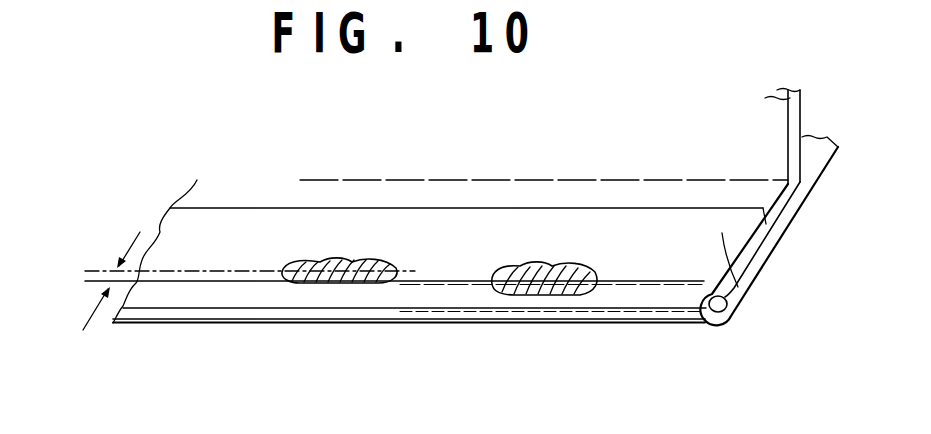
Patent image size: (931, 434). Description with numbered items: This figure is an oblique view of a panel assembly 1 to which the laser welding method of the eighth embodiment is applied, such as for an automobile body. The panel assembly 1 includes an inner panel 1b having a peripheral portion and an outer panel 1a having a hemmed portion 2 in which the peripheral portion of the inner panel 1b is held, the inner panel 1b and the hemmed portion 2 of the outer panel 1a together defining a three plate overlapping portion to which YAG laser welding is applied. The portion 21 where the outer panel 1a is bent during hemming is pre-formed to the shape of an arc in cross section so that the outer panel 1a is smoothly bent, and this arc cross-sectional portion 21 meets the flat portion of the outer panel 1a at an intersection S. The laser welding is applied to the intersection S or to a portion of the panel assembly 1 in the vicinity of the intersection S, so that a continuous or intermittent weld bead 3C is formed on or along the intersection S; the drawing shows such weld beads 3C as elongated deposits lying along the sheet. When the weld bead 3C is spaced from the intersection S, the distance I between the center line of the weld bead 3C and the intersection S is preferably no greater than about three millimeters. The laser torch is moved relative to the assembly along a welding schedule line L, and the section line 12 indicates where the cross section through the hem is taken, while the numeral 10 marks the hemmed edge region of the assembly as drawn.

The panel assembly 1 is at (772, 70).
The outer panel 1a is at (816, 158).
The inner panel 1b is at (780, 158).
The hemmed portion 2 is at (657, 238).
The weld bead 3C is at (312, 258).
The hem fold 10 is at (748, 302).
The section line 12 is at (273, 383).
The arc cross-sectional portion 21 is at (697, 313).
The intersection S is at (440, 282).
The welding schedule line L is at (100, 340).
The distance I is at (112, 276).